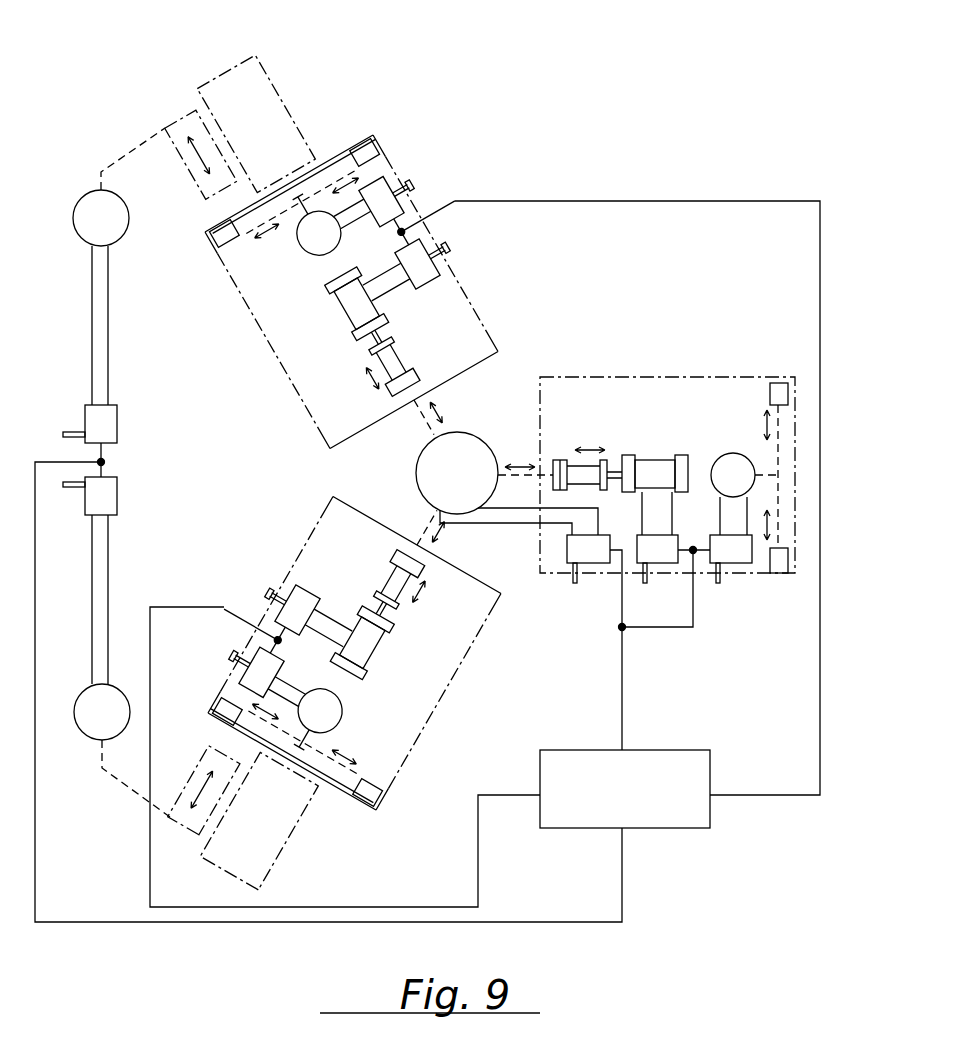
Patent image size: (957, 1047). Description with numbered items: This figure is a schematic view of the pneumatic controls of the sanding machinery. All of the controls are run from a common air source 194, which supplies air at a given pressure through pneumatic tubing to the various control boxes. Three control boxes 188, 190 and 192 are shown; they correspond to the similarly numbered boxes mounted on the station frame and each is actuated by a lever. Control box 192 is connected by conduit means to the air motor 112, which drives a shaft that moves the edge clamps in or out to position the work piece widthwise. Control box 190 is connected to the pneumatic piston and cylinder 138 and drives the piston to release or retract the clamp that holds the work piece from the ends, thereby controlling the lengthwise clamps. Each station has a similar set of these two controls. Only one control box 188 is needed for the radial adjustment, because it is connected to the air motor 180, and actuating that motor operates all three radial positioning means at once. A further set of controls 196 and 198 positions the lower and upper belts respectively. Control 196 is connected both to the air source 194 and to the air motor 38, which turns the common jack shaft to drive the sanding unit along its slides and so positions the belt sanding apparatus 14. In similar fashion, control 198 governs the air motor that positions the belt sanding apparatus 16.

The belt sanding apparatus 14 is at (308, 841).
The belt sanding apparatus 16 is at (315, 119).
The air motor 38 is at (95, 702).
The air motor 112 is at (727, 462).
The pneumatic piston and cylinder 138 is at (655, 467).
The air motor 180 is at (467, 452).
The control box 188 is at (591, 558).
The control box 190 is at (662, 555).
The control box 192 is at (738, 557).
The air source 194 is at (683, 835).
The control 196 is at (110, 500).
The control 198 is at (117, 423).